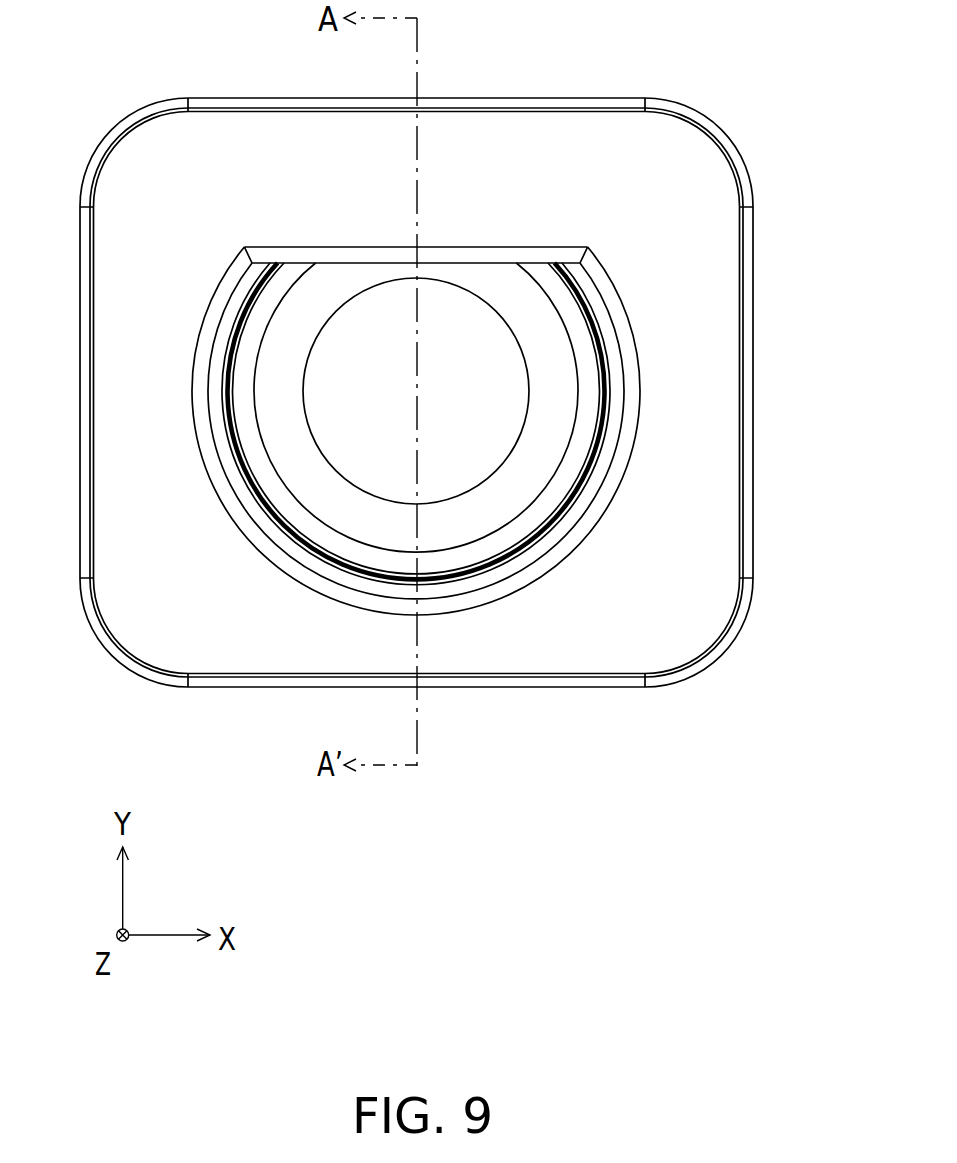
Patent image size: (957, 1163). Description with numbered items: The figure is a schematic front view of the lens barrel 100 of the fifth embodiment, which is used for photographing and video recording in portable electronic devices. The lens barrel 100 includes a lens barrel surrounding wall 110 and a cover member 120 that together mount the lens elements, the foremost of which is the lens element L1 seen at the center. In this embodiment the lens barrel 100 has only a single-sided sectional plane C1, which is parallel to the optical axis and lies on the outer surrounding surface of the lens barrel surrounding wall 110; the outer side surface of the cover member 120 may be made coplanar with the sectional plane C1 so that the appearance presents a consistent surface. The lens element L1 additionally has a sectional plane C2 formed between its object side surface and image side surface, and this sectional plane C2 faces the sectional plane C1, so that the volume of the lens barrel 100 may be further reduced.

The lens barrel 100 is at (754, 97).
The lens barrel surrounding wall 110 is at (712, 476).
The cover member 120 is at (524, 311).
The lens element L1 is at (353, 438).
The sectional plane C1 is at (478, 245).
The sectional plane C2 is at (338, 262).